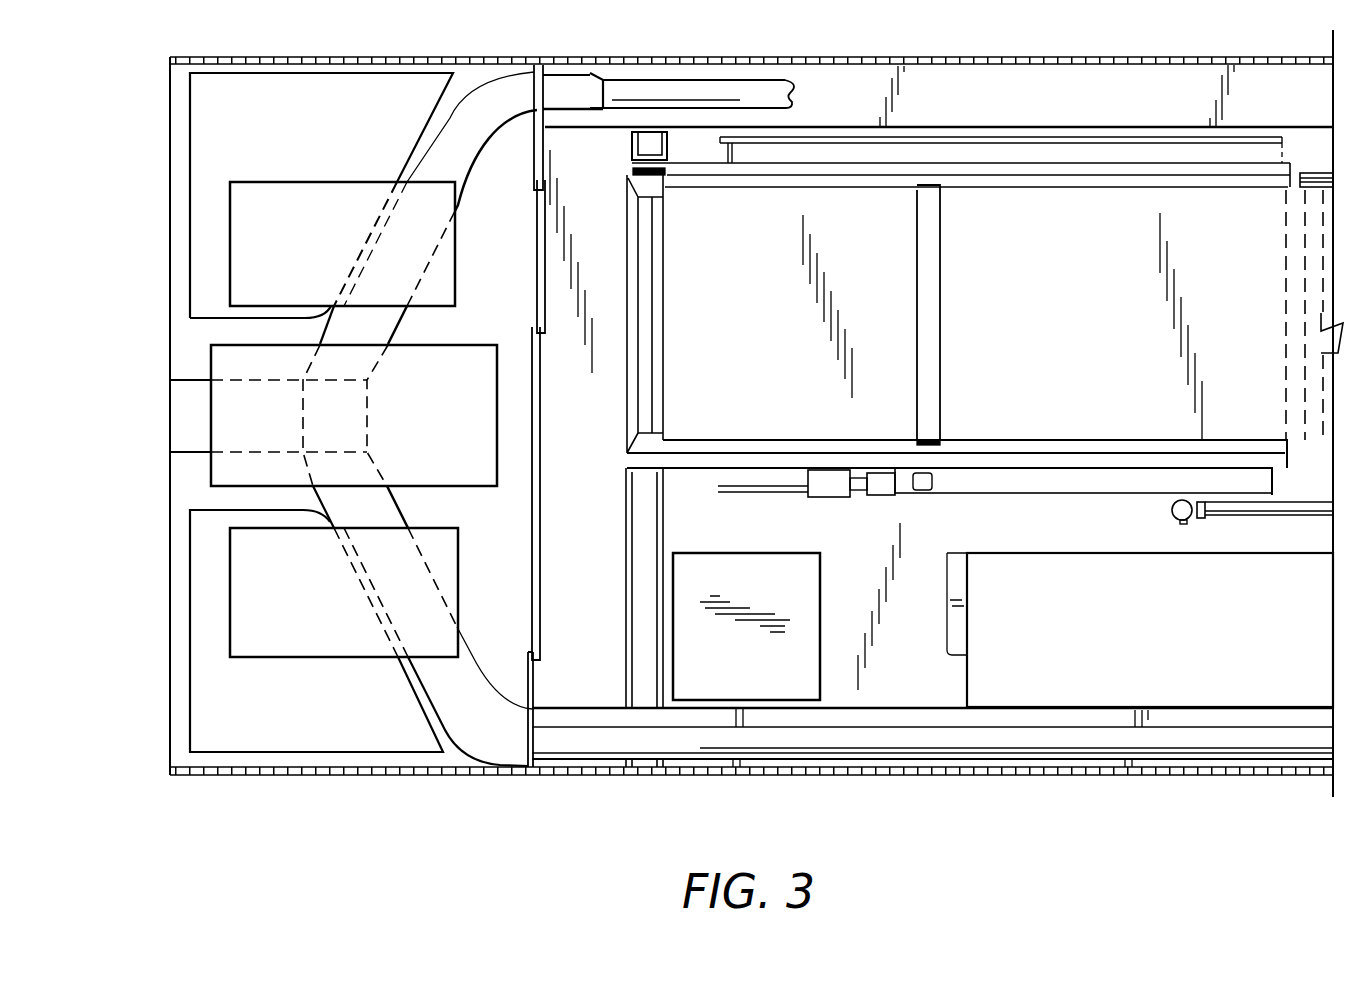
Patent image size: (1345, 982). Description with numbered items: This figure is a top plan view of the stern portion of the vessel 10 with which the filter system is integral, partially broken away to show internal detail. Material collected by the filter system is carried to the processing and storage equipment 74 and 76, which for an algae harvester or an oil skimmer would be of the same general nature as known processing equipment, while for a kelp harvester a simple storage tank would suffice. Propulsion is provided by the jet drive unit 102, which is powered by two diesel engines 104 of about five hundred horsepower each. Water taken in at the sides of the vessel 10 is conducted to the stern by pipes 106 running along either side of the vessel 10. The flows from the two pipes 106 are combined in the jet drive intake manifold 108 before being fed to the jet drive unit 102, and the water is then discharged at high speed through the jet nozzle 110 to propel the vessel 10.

The propelling vessel 10 is at (988, 815).
The processing and storage equipment 74 is at (1012, 203).
The processing and storage equipment 76 is at (740, 677).
The jet drive unit 102 is at (474, 350).
The diesel engines 104 is at (304, 195).
The pipes 106 is at (677, 90).
The jet drive intake manifold 108 is at (365, 446).
The jet nozzle 110 is at (188, 452).